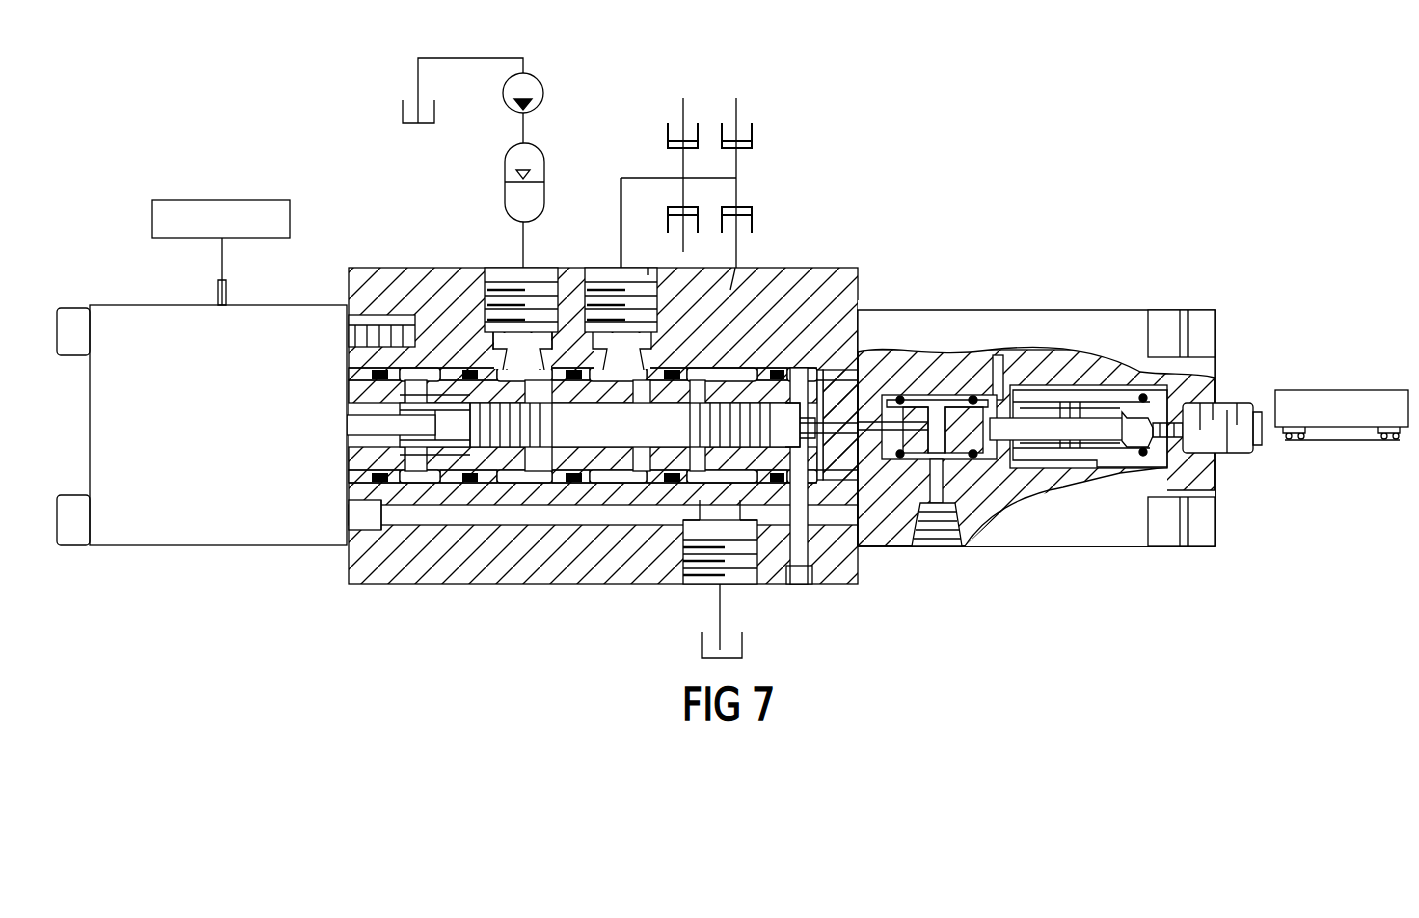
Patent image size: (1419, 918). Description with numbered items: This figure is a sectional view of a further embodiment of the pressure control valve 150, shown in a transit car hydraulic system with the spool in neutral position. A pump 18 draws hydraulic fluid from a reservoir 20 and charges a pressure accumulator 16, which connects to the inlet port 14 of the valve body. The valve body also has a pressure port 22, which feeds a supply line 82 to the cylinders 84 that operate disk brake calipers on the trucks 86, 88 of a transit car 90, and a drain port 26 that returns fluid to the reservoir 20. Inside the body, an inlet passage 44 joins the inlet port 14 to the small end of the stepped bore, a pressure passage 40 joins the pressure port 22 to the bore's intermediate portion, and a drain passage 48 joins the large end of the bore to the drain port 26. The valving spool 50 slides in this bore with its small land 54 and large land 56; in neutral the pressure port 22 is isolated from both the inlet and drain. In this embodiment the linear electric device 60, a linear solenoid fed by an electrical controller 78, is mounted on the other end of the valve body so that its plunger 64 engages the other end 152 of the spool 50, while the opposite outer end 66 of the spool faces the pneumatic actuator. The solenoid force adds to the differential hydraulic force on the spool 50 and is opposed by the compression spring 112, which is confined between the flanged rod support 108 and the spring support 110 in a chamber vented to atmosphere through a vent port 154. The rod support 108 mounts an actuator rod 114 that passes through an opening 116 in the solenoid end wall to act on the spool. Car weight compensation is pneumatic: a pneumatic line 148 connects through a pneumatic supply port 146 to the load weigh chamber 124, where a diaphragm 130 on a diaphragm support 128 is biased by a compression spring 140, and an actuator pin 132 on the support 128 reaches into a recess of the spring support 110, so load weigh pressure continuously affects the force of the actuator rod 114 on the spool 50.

The inlet port 14 is at (548, 268).
The pressure accumulator 16 is at (544, 150).
The pump 18 is at (540, 83).
The reservoir 20 is at (403, 108).
The pressure port 22 is at (646, 272).
The drain port 26 is at (746, 586).
The pressure passage 40 is at (612, 276).
The inlet passage 44 is at (508, 275).
The drain passage 48 is at (706, 576).
The valving spool 50 is at (610, 565).
The small land 54 is at (482, 570).
The large land 56 is at (740, 280).
The linear electric device 60 is at (135, 290).
The output plunger 64 is at (357, 428).
The outer end 66 is at (800, 285).
The electrical controller 78 is at (290, 208).
The supply line 82 is at (633, 178).
The cylinders 84 is at (697, 128).
The truck 86 is at (1296, 440).
The truck 88 is at (1388, 440).
The transit car 90 is at (1338, 440).
The flanged rod support 108 is at (905, 352).
The spring support 110 is at (990, 352).
The compression spring 112 is at (968, 352).
The actuator rod 114 is at (892, 548).
The opening 116 is at (873, 350).
The pneumatic load weigh chamber 124 is at (1074, 404).
The diaphragm support 128 is at (1145, 355).
The diaphragm 130 is at (1128, 546).
The actuator pin 132 is at (1062, 546).
The compression spring 140 is at (1032, 548).
The pneumatic supply port 146 is at (1262, 400).
The pneumatic line 148 is at (1277, 400).
The pressure control valve 150 is at (900, 220).
The other end 152 is at (457, 428).
The vent port 154 is at (942, 548).